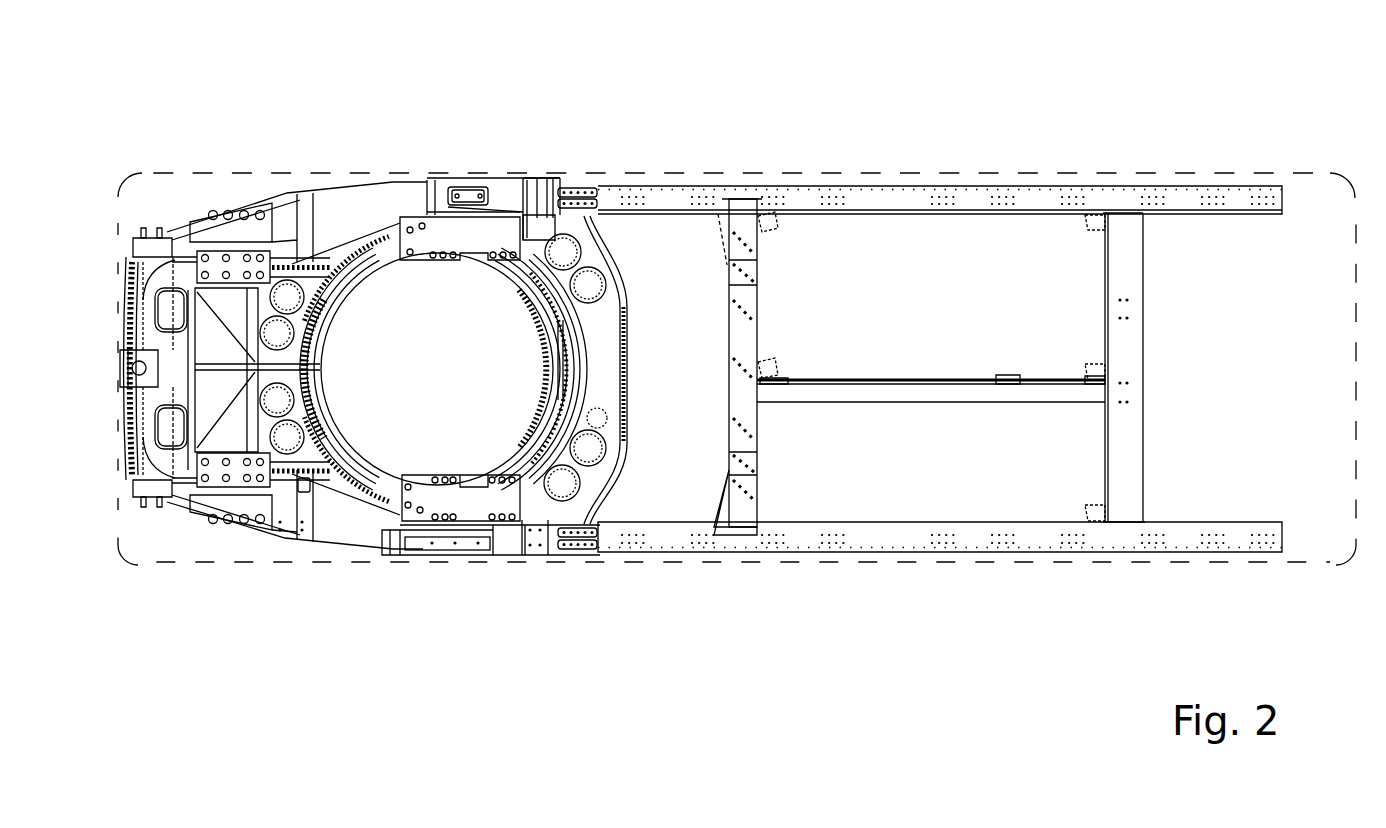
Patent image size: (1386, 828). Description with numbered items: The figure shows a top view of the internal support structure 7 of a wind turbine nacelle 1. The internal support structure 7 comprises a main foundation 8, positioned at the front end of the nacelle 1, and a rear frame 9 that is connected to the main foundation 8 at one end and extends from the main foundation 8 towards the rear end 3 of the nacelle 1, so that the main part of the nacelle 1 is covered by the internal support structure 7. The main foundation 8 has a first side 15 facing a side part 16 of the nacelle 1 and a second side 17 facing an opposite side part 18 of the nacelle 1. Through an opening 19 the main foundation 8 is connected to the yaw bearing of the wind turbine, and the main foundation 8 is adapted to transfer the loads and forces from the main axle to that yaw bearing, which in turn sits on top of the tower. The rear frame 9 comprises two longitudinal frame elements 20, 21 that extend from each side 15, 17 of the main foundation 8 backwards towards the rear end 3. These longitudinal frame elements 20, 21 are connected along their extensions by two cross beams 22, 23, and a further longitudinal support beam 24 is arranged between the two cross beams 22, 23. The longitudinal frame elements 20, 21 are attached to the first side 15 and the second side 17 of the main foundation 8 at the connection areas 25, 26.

The nacelle 1 is at (168, 172).
The rear end 3 is at (1355, 513).
The internal support structure 7 is at (327, 522).
The main foundation 8 is at (368, 195).
The rear frame 9 is at (818, 543).
The first side 15 is at (443, 553).
The side part 16 is at (677, 562).
The second side 17 is at (467, 178).
The opposite side part 18 is at (553, 174).
The opening 19 is at (470, 428).
The longitudinal frame element 20 is at (868, 538).
The longitudinal frame element 21 is at (862, 195).
The cross beam 22 is at (738, 322).
The cross beam 23 is at (1115, 288).
The longitudinal support beam 24 is at (983, 390).
The connection area 25 is at (572, 550).
The connection area 26 is at (583, 188).